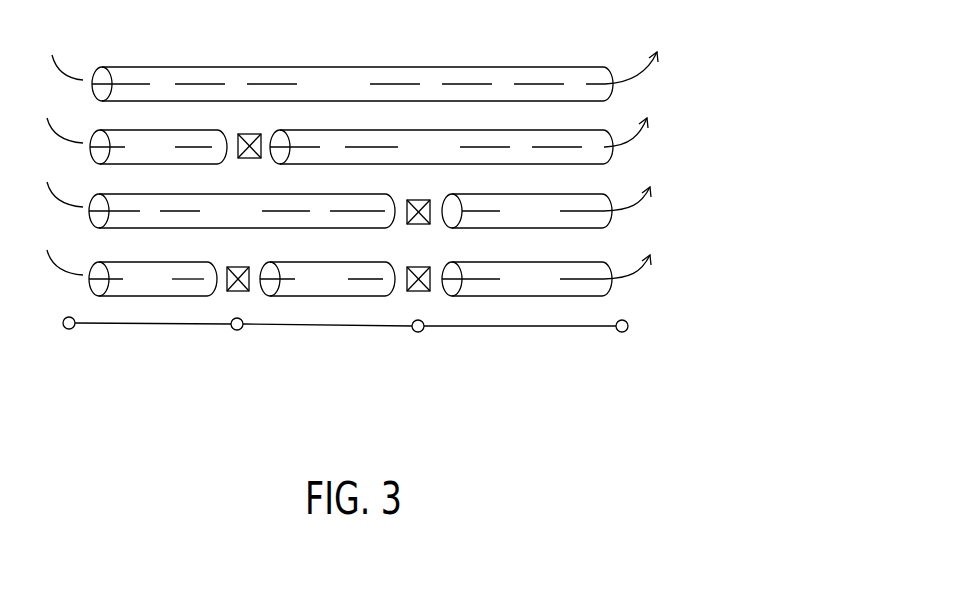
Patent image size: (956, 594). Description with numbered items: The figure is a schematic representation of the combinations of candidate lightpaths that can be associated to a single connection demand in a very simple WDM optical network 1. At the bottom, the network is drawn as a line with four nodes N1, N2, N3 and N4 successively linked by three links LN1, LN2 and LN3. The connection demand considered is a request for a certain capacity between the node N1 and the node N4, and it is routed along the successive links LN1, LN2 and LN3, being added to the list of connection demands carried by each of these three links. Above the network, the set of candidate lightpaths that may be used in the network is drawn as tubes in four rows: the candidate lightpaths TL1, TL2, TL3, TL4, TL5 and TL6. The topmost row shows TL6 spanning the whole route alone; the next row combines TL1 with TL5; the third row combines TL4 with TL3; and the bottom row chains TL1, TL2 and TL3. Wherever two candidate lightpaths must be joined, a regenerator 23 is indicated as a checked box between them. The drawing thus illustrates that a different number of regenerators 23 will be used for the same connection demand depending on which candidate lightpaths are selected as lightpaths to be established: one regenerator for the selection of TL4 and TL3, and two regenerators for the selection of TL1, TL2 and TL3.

The WDM optical network 1 is at (365, 352).
The regenerator 23 is at (249, 133).
The candidate lightpath TL1 is at (158, 213).
The candidate lightpath TL2 is at (327, 279).
The candidate lightpath TL3 is at (546, 241).
The candidate lightpath TL4 is at (242, 211).
The candidate lightpath TL5 is at (459, 141).
The candidate lightpath TL6 is at (375, 76).
The node N1 is at (67, 339).
The node N2 is at (235, 339).
The node N3 is at (414, 341).
The node N4 is at (616, 342).
The link LN1 is at (154, 326).
The link LN2 is at (342, 327).
The link LN3 is at (530, 328).